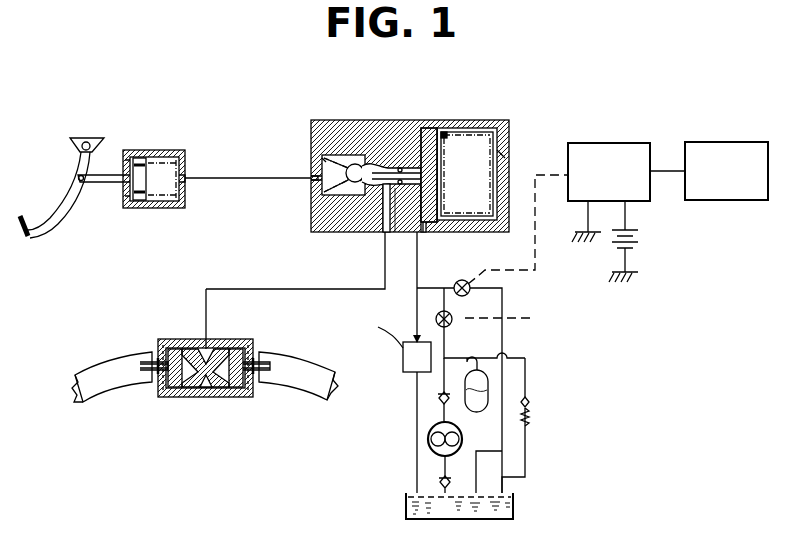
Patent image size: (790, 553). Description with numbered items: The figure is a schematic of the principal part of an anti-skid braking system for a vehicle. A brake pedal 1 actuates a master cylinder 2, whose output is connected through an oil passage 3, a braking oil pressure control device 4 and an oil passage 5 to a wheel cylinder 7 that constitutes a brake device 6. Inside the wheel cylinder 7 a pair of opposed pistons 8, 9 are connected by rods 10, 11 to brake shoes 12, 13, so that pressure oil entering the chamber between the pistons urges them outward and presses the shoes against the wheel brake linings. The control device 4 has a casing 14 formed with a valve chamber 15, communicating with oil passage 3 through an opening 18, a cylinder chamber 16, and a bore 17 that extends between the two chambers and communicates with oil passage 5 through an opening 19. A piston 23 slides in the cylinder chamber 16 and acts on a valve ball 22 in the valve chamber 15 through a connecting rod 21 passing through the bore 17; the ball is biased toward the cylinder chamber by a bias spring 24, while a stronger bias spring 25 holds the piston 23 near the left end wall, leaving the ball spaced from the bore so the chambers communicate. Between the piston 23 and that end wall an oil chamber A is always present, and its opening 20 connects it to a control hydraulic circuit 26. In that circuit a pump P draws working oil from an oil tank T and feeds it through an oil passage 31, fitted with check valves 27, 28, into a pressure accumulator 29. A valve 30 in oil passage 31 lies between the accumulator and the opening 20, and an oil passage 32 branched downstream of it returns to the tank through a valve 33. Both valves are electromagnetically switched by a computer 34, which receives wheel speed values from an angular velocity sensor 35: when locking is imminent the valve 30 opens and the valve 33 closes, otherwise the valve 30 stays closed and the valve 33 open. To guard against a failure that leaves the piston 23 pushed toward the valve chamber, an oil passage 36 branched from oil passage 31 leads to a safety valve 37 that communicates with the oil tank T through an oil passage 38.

The brake pedal 1 is at (62, 214).
The master cylinder 2 is at (160, 148).
The oil passage 3 is at (247, 176).
The braking oil pressure control device 4 is at (407, 160).
The oil passage 5 is at (262, 288).
The brake device 6 is at (205, 355).
The wheel cylinder 7 is at (205, 398).
The piston 8 is at (192, 397).
The piston 9 is at (222, 397).
The rod 10 is at (158, 360).
The rod 11 is at (253, 356).
The brake shoe 12 is at (118, 392).
The brake shoe 13 is at (287, 390).
The casing 14 is at (336, 121).
The valve chamber 15 is at (347, 194).
The cylinder chamber 16 is at (503, 153).
The bore 17 is at (396, 168).
The opening 18 is at (316, 181).
The opening 19 is at (383, 222).
The opening 20 is at (412, 226).
The connecting rod 21 is at (408, 210).
The valve ball 22 is at (356, 164).
The piston 23 is at (433, 185).
The bias spring 24 is at (322, 158).
The bias spring 25 is at (444, 134).
The control hydraulic circuit 26 is at (538, 358).
The check valve 27 is at (438, 480).
The check valve 28 is at (438, 396).
The pressure accumulator 29 is at (480, 368).
The valve 30 is at (454, 318).
The oil passage 31 is at (416, 258).
The oil passage 32 is at (437, 290).
The valve 33 is at (468, 281).
The computer 34 is at (607, 149).
The angular velocity sensor 35 is at (720, 145).
The oil passage 36 is at (416, 313).
The safety valve 37 is at (402, 356).
The oil passage 38 is at (418, 425).
The oil chamber A is at (424, 230).
The pump P is at (463, 432).
The oil tank T is at (518, 497).